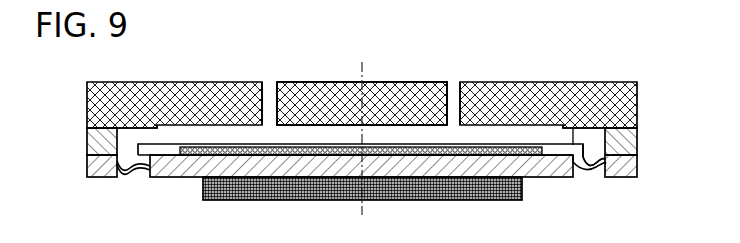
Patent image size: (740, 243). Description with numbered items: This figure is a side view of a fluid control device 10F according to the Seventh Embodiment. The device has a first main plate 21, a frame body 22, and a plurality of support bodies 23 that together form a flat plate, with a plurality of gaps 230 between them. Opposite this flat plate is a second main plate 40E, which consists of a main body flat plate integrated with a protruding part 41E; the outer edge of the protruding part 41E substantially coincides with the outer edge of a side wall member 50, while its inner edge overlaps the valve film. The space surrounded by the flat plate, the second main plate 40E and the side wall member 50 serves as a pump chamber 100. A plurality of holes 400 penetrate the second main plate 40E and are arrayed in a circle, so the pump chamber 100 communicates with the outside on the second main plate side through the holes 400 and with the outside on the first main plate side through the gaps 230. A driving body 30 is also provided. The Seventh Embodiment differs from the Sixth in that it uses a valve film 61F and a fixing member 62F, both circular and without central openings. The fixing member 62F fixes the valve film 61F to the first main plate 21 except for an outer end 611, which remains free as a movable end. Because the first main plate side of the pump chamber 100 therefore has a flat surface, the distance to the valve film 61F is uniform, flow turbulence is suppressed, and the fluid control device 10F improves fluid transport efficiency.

The fluid control device 10F is at (613, 55).
The second main plate 40E is at (637, 100).
The protruding part 41E is at (637, 125).
The holes 400 is at (270, 80).
The pump chamber 100 is at (327, 137).
The valve film 61F is at (573, 128).
The side wall member 50 is at (632, 140).
The first main plate 21 is at (395, 168).
The frame body 22 is at (628, 167).
The driving body 30 is at (433, 190).
The fixing member 62F is at (503, 157).
The support bodies 23 is at (598, 176).
The gaps 230 is at (590, 180).
The outer end 611 is at (581, 168).